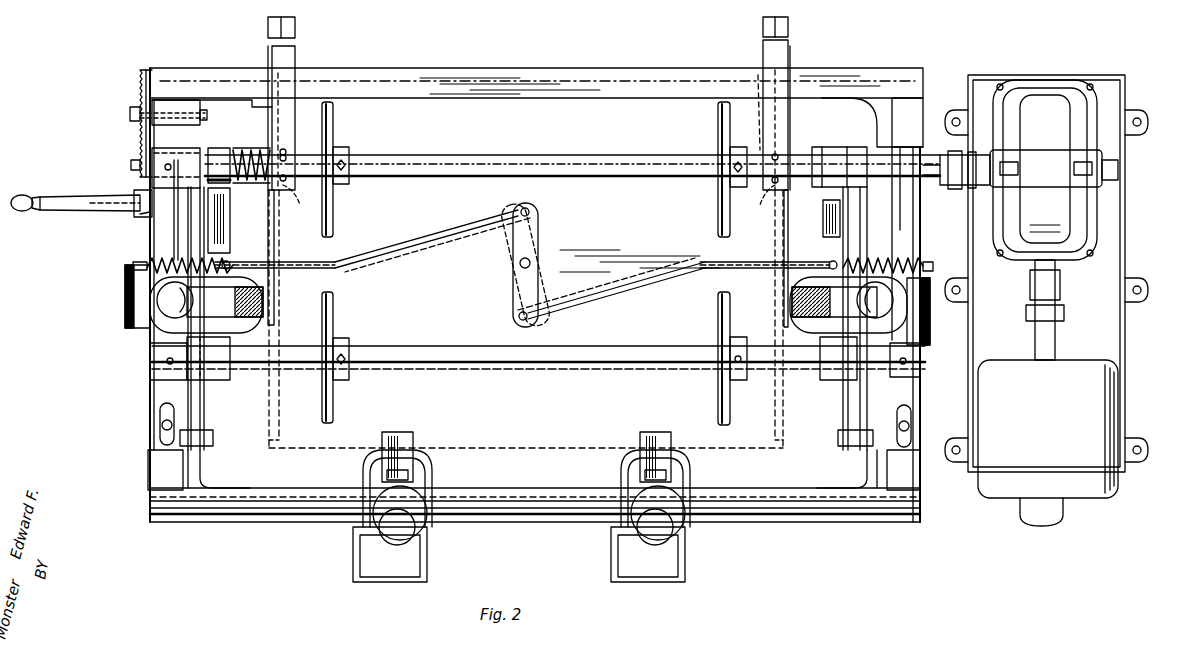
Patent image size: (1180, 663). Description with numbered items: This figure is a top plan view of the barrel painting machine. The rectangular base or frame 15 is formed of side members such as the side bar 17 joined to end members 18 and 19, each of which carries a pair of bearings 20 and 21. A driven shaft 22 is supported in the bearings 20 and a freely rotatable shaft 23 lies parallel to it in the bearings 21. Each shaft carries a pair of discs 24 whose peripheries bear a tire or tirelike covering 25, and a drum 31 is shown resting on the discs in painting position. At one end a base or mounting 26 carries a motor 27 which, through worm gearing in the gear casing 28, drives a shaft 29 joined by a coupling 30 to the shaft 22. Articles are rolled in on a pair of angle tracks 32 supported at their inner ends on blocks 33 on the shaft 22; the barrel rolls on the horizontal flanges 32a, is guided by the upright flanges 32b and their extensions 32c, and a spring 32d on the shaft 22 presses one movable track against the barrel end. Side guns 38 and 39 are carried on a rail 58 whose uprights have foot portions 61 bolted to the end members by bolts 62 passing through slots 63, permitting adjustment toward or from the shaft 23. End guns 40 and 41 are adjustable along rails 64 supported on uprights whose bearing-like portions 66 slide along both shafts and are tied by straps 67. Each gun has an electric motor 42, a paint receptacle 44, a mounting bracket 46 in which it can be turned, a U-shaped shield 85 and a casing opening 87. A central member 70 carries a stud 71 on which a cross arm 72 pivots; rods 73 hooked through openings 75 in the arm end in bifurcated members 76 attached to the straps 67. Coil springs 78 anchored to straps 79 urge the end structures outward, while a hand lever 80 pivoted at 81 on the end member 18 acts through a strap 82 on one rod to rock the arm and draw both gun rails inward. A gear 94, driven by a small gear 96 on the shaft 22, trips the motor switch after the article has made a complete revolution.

The base or frame 15 is at (447, 72).
The side bar or member 17 is at (757, 76).
The end member 18 is at (157, 388).
The end member 19 is at (910, 117).
The bearing 20 is at (160, 148).
The bearing 21 is at (155, 362).
The shaft 22 is at (472, 162).
The shaft 23 is at (568, 352).
The disc or wheel 24 is at (347, 137).
The tire or tirelike covering 25 is at (335, 110).
The base or mounting 26 is at (1124, 232).
The motor 27 is at (1068, 422).
The gear casing or housing 28 is at (1050, 128).
The shaft 29 is at (1118, 170).
The coupling 30 is at (958, 186).
The drum 31 is at (290, 448).
The tracks 32 is at (298, 56).
The horizontal flange 32a is at (268, 25).
The upright flange 32b is at (272, 62).
The extension of upright flange 32c is at (340, 256).
The spring 32d is at (286, 153).
The block 33 is at (529, 210).
The gun 38 is at (400, 580).
The gun 39 is at (672, 548).
The gun 40 is at (172, 300).
The gun 41 is at (900, 300).
The electric motor 42 is at (172, 310).
The container or receptacle 44 is at (128, 315).
The mounting bracket 46 is at (240, 322).
The support or rail 58 is at (770, 512).
The foot portion 61 is at (160, 468).
The bolt 62 is at (160, 428).
The slot 63 is at (160, 410).
The supporting rail 64 is at (205, 152).
The bearing-like member or portion 66 is at (243, 160).
The strap or cross piece 67 is at (220, 223).
The central member 70 is at (555, 258).
The stud 71 is at (520, 266).
The cross arm 72 is at (530, 225).
The rod 73 is at (408, 242).
The opening 75 is at (503, 334).
The bifurcated member 76 is at (230, 262).
The coil spring 78 is at (160, 258).
The strap 79 is at (132, 265).
The hand lever 80 is at (62, 200).
The pivot 81 is at (140, 214).
The strap 82 is at (104, 198).
The U-shaped shield 85 is at (258, 303).
The opening 87 is at (693, 441).
The gear 94 is at (141, 75).
The gear 96 is at (138, 165).